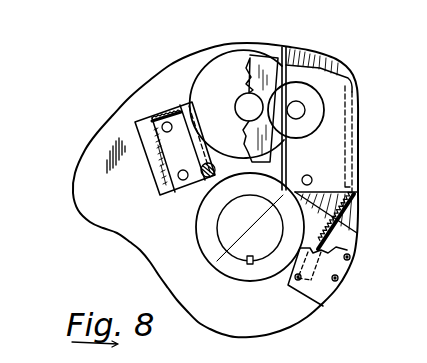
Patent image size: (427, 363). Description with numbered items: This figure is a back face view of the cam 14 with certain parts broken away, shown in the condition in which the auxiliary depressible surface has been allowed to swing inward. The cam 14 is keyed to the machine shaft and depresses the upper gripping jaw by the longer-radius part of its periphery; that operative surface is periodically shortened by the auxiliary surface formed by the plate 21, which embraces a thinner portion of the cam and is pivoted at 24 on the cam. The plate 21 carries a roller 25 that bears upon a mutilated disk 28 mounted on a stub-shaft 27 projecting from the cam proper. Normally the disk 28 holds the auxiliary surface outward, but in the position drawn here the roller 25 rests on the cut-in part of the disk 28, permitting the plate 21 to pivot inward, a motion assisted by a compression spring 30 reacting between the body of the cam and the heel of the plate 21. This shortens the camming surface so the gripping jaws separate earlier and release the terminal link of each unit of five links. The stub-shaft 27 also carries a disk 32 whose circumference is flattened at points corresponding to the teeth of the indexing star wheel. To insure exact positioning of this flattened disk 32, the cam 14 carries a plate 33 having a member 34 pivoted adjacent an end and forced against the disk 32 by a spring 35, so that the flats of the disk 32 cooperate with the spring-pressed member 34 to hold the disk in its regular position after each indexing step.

The cam 14 is at (236, 316).
The plate 21 is at (333, 112).
The pivot 24 is at (310, 176).
The roller 25 is at (300, 92).
The stub-shaft 27 is at (236, 105).
The mutilated disk 28 is at (263, 64).
The compression spring 30 is at (348, 208).
The disk 32 is at (213, 85).
The plate 33 is at (185, 187).
The member 34 is at (195, 135).
The spring 35 is at (167, 117).